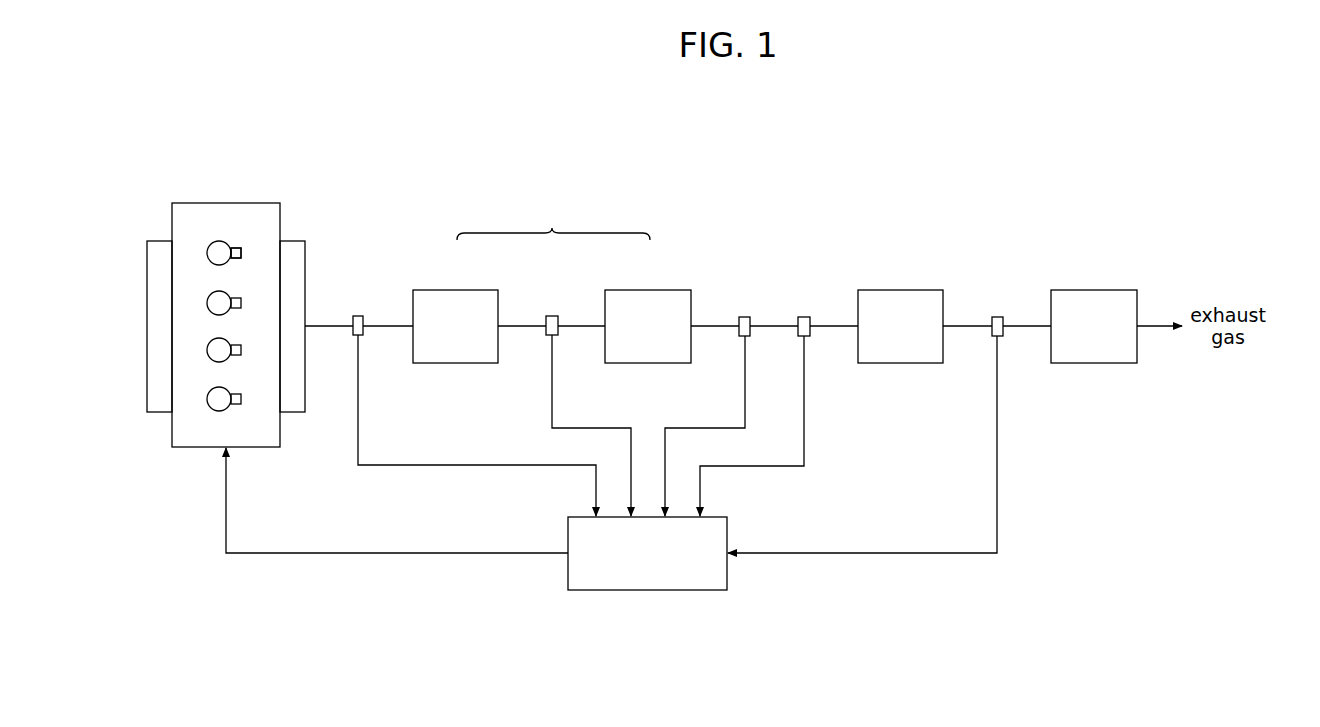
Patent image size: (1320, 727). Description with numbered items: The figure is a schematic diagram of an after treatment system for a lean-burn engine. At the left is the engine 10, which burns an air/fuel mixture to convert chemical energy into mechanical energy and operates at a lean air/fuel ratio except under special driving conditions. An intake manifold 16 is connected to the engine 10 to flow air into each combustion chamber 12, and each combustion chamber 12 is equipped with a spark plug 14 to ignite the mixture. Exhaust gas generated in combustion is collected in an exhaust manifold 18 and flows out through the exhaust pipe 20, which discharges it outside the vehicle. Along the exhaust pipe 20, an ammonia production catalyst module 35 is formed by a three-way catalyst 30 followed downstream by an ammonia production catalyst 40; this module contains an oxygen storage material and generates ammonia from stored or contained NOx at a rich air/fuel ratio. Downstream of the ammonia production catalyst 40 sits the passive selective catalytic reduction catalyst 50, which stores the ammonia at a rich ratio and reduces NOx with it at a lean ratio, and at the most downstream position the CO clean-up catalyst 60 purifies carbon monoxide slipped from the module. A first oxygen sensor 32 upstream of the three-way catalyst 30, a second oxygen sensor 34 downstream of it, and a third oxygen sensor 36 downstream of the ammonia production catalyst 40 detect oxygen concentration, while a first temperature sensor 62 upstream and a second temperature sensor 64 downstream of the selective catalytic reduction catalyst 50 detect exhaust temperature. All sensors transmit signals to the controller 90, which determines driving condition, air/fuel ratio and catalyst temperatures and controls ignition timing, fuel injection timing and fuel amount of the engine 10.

The engine 10 is at (246, 194).
The combustion chamber 12 is at (219, 241).
The spark plug 14 is at (241, 254).
The intake manifold 16 is at (155, 241).
The exhaust manifold 18 is at (292, 241).
The exhaust pipe 20 is at (328, 327).
The three-way catalyst (TWC) 30 is at (455, 290).
The first oxygen sensor 32 is at (358, 316).
The second oxygen sensor 34 is at (552, 316).
The ammonia production catalyst module 35 is at (553, 222).
The third oxygen sensor 36 is at (745, 317).
The ammonia production catalyst (APC) 40 is at (648, 290).
The selective catalytic reduction (SCR) catalyst 50 is at (901, 290).
The CO clean-up catalyst (CUC) 60 is at (1094, 290).
The first temperature sensor 62 is at (804, 317).
The second temperature sensor 64 is at (997, 317).
The controller 90 is at (647, 591).